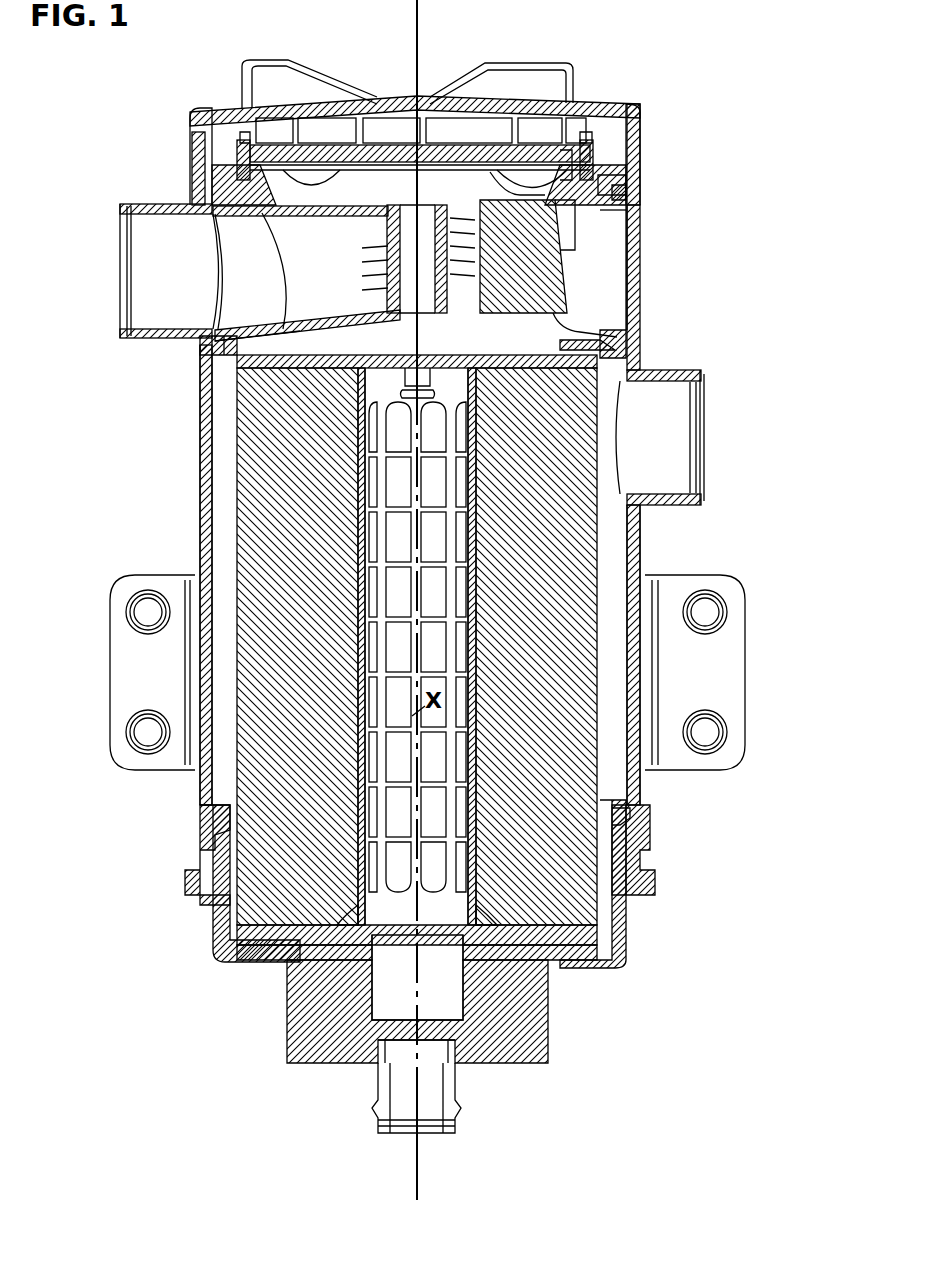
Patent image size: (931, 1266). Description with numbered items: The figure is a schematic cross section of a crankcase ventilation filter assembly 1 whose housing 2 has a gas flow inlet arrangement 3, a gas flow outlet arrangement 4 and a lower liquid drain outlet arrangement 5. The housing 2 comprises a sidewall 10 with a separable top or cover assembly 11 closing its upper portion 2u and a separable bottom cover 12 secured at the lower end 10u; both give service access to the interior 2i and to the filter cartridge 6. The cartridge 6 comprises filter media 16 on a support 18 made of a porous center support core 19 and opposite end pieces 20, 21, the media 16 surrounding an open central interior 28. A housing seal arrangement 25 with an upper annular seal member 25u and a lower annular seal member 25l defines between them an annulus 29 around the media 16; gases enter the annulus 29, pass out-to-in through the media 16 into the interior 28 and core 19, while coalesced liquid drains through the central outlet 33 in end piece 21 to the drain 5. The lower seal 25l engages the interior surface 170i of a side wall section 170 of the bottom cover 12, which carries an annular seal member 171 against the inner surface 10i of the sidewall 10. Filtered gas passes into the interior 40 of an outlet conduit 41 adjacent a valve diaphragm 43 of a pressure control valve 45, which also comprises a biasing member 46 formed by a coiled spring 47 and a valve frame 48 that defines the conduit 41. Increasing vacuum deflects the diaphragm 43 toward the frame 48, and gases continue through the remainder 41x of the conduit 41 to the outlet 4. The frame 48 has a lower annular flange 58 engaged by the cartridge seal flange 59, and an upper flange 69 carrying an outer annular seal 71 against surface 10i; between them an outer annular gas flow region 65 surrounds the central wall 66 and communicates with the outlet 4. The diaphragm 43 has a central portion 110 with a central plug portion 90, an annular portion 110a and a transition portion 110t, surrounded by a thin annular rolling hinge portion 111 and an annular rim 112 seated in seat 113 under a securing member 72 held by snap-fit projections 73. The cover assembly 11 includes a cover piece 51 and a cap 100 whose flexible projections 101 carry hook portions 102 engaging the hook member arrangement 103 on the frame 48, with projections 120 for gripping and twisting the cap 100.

The crankcase ventilation filter assembly 1 is at (96, 455).
The housing 2 is at (200, 408).
The interior of the housing 2i is at (215, 462).
The upper portion of the housing 2u is at (640, 300).
The gas flow inlet arrangement 3 is at (698, 385).
The gas flow outlet arrangement 4 is at (132, 214).
The liquid drain outlet arrangement 5 is at (432, 1118).
The filter cartridge 6 is at (582, 600).
The sidewall 10 is at (200, 522).
The inner surface of housing side wall 10i is at (612, 228).
The lower end of side wall 10u is at (645, 842).
The top or cover assembly 11 is at (612, 108).
The bottom cover 12 is at (583, 965).
The filter media 16 is at (258, 722).
The support 18 is at (380, 664).
The porous center support core 19 is at (390, 545).
The end piece 20 is at (325, 364).
The end piece 21 is at (278, 945).
The housing seal arrangement 25 is at (640, 355).
The upper annular seal member 25u is at (228, 362).
The lower annular seal member 25l is at (232, 942).
The open central interior 28 is at (358, 608).
The annulus 29 is at (620, 640).
The central outlet 33 is at (378, 938).
The interior of outlet conduit 40 is at (338, 305).
The outlet conduit 41 is at (318, 217).
The remainder of outlet conduit 41x is at (298, 322).
The valve diaphragm 43 is at (443, 152).
The pressure control valve 45 is at (362, 145).
The biasing member 46 is at (458, 228).
The coiled spring 47 is at (368, 250).
The valve frame 48 is at (548, 300).
The cover piece 51 is at (289, 100).
The lower annular flange 58 is at (606, 330).
The seal flange 59 is at (612, 344).
The outer annular gas flow region 65 is at (612, 264).
The central wall 66 is at (570, 250).
The upper flange 69 is at (614, 182).
The outer annular seal 71 is at (628, 192).
The securing member 72 is at (566, 152).
The snap-fit projections 73 is at (238, 146).
The central plug portion 90 is at (447, 163).
The cap 100 is at (404, 100).
The flexible projections 101 is at (314, 130).
The hook portion 102 is at (277, 130).
The hook member arrangement 103 is at (246, 134).
The central portion 110 is at (302, 200).
The annular portion 110a is at (506, 176).
The transition portion 110t is at (463, 164).
The annular rolling hinge portion 111 is at (240, 212).
The annular rim 112 is at (248, 176).
The seat 113 is at (592, 160).
The projections 120 is at (258, 63).
The side wall section 170 is at (620, 905).
The interior surface of side wall section 170i is at (218, 888).
The annular seal member 171 is at (628, 818).